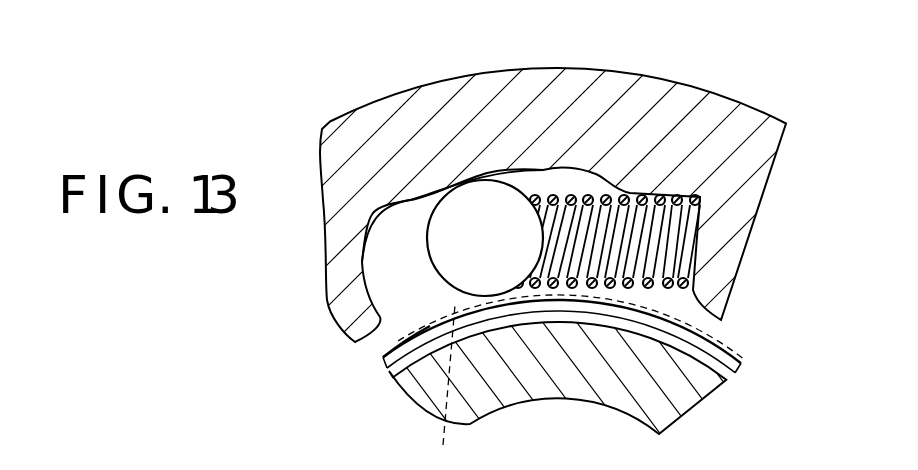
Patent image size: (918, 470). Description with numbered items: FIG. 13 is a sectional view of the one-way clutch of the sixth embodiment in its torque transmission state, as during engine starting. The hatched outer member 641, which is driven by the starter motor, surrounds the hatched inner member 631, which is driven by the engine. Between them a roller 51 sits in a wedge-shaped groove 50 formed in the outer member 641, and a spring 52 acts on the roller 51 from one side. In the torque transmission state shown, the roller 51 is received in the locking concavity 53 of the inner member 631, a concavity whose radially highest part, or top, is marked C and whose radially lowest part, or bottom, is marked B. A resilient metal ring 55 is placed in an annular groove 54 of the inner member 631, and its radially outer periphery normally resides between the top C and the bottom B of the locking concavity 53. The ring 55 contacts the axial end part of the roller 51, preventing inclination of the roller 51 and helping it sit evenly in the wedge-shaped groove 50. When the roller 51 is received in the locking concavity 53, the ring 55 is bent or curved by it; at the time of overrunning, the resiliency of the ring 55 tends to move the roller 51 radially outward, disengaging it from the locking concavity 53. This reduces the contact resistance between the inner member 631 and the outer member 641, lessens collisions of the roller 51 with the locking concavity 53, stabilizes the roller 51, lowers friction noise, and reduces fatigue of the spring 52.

The wedge-shaped groove 50 is at (410, 250).
The roller 51 is at (492, 232).
The spring 52 is at (687, 248).
The locking concavity 53 is at (707, 352).
The annular groove 54 is at (707, 370).
The resilient metal ring 55 is at (385, 357).
The inner member 631 is at (543, 380).
The outer member 641 is at (682, 97).
The radially lowest part (bottom) of the locking concavity B is at (446, 387).
The radially highest part (top) of the locking concavity C is at (407, 332).